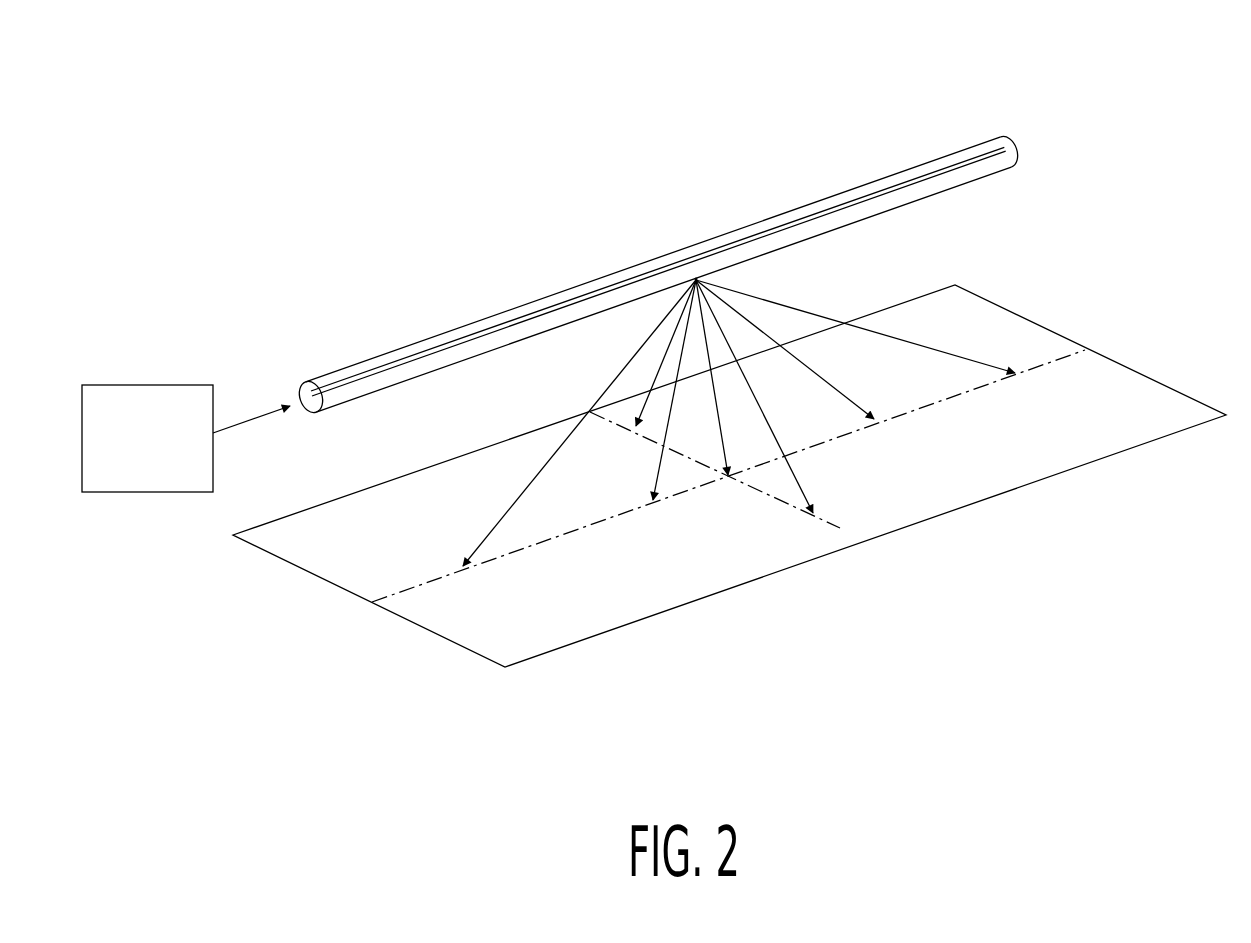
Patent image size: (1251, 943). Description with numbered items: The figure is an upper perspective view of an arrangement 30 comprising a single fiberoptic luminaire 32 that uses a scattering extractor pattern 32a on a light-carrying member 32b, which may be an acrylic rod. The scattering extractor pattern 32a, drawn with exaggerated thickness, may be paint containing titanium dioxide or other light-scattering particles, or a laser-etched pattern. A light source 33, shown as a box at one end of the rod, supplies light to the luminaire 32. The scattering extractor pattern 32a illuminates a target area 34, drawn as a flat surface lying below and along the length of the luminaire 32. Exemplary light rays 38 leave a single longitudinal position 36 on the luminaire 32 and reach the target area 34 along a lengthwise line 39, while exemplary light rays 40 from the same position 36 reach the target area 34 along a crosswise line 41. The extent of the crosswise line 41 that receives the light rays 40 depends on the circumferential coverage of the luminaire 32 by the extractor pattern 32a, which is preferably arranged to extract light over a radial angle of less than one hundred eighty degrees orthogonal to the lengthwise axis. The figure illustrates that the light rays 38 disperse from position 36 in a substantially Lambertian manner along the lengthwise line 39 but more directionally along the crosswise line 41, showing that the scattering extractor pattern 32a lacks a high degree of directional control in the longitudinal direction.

The arrangement 30 is at (312, 233).
The luminaire 32 is at (722, 222).
The scattering extractor pattern 32a is at (940, 158).
The light-carrying member 32b is at (1018, 152).
The light source 33 is at (142, 385).
The target area 34 is at (767, 578).
The longitudinal position 36 is at (694, 252).
The light rays 38 is at (760, 312).
The lengthwise line 39 is at (1050, 362).
The light rays 40 is at (664, 352).
The crosswise line 41 is at (845, 527).